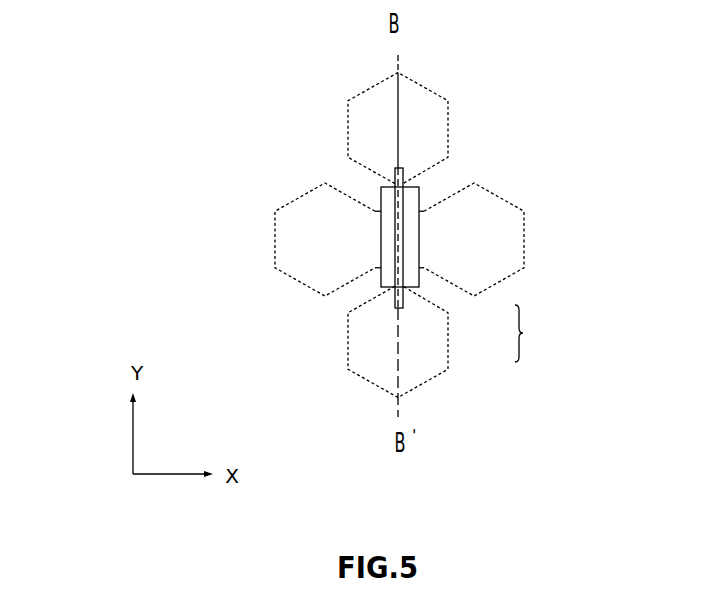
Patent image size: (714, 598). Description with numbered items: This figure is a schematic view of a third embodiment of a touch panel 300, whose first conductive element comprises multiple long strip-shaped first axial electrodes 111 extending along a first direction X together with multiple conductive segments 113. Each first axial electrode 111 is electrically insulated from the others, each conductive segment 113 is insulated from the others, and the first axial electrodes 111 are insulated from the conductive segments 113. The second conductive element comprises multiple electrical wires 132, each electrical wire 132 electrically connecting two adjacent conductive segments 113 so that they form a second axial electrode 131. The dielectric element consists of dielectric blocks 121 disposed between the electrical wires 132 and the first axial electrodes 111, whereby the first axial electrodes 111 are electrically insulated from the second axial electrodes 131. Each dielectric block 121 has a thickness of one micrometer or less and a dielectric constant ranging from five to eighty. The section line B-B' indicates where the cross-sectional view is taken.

The touch panel 300 is at (122, 62).
The first axial electrode 111 is at (524, 222).
The conductive segment 113 is at (448, 362).
The dielectric block 121 is at (405, 184).
The second axial electrode 131 is at (541, 333).
The electrical wire 132 is at (403, 278).